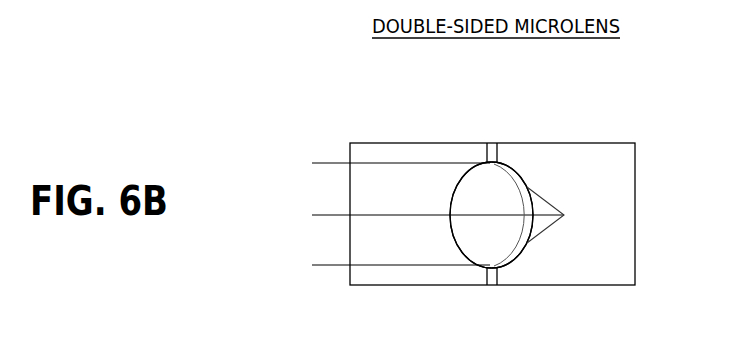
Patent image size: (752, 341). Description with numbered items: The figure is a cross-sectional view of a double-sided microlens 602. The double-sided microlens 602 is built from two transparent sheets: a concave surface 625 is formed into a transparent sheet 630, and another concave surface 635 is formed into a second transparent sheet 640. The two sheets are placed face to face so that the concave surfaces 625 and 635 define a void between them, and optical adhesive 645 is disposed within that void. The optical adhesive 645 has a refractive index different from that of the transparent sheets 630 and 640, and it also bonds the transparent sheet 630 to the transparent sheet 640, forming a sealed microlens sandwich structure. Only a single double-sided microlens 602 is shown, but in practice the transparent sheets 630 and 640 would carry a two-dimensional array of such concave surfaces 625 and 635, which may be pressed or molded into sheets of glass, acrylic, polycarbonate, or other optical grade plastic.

The double-sided microlens 602 is at (657, 115).
The concave surface 625 is at (458, 242).
The transparent sheet 630 is at (393, 197).
The concave surface 635 is at (517, 178).
The transparent sheet 640 is at (608, 266).
The optical adhesive 645 is at (487, 198).